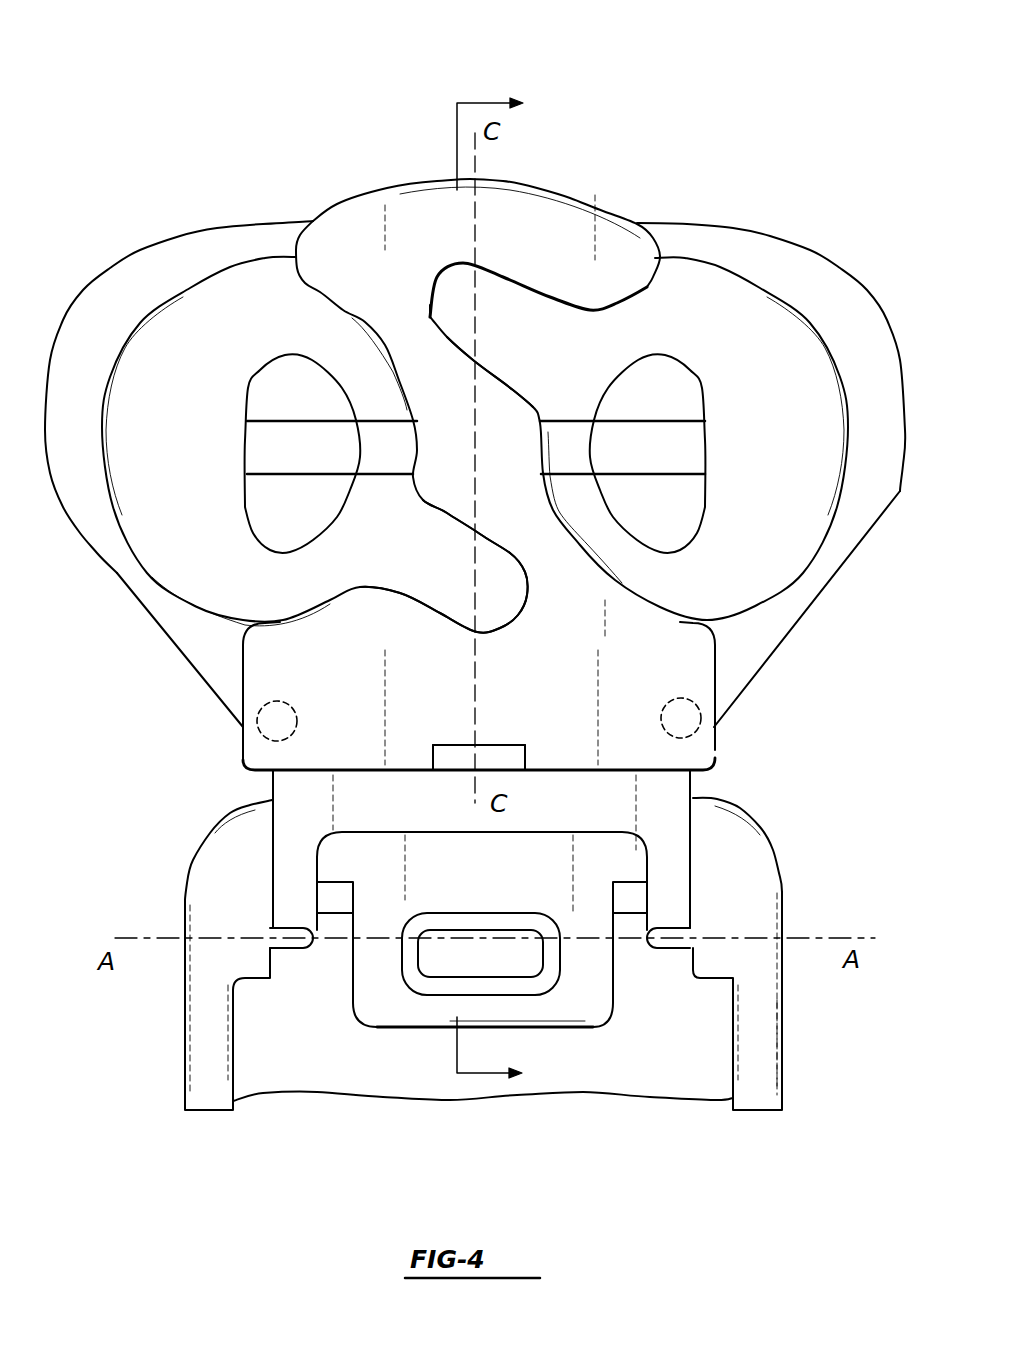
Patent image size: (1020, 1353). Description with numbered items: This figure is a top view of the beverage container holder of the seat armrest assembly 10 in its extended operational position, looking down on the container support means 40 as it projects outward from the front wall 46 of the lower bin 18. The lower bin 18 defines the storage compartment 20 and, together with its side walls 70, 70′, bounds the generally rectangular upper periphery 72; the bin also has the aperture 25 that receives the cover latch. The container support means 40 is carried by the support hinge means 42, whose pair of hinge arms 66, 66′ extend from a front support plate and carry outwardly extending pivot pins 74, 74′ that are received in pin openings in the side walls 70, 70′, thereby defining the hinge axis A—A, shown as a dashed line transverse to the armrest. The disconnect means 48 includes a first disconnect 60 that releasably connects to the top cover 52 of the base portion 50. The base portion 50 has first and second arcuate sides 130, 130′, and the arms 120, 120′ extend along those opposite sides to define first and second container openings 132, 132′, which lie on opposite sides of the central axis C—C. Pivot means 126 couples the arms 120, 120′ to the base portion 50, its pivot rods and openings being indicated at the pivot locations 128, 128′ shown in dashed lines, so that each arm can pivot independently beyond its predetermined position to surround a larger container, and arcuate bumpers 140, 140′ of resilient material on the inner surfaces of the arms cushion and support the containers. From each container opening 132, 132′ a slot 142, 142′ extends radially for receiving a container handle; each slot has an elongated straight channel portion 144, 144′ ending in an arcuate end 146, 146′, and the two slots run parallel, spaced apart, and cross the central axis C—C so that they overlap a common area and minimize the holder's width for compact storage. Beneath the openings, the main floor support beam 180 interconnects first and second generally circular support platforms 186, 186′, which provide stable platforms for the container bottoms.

The seat armrest assembly 10 is at (512, 589).
The lower bin 18 is at (190, 860).
The storage compartment 20 is at (233, 1073).
The aperture 25 is at (447, 968).
The container support means 40 is at (767, 140).
The support hinge means 42 is at (196, 800).
The front wall 46 is at (713, 798).
The disconnect means 48 is at (490, 743).
The base portion 50 is at (623, 203).
The top cover 52 is at (380, 200).
The first disconnect 60 is at (453, 743).
The hinge arm 66 is at (282, 863).
The hinge arm 66′ is at (680, 849).
The side wall 70 is at (183, 1067).
The side wall 70′ is at (783, 1083).
The upper periphery 72 is at (773, 1020).
The pivot pin 74 is at (297, 950).
The pivot pin 74′ is at (662, 948).
The arm 120 is at (148, 252).
The arm 120′ is at (812, 250).
The pivot means 126 is at (737, 717).
The left bore 128 is at (283, 700).
The right bore 128′ is at (673, 698).
The arcuate side 130 is at (343, 310).
The arcuate side 130′ is at (600, 567).
The container opening 132 is at (150, 567).
The container opening 132′ is at (793, 580).
The arcuate bumper 140 is at (145, 337).
The arcuate bumper 140′ is at (772, 288).
The slot 142 is at (437, 610).
The slot 142′ is at (510, 274).
The elongated straight channel portion 144 is at (443, 507).
The elongated straight channel portion 144′ is at (497, 367).
The arcuate end 146 is at (503, 553).
The arcuate end 146′ is at (430, 312).
The main floor support beam 180 is at (350, 480).
The support platform 186 is at (260, 403).
The support platform 186′ is at (698, 407).